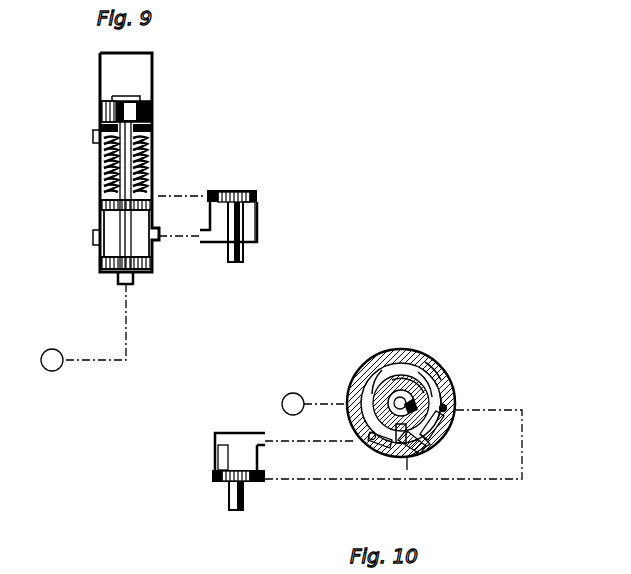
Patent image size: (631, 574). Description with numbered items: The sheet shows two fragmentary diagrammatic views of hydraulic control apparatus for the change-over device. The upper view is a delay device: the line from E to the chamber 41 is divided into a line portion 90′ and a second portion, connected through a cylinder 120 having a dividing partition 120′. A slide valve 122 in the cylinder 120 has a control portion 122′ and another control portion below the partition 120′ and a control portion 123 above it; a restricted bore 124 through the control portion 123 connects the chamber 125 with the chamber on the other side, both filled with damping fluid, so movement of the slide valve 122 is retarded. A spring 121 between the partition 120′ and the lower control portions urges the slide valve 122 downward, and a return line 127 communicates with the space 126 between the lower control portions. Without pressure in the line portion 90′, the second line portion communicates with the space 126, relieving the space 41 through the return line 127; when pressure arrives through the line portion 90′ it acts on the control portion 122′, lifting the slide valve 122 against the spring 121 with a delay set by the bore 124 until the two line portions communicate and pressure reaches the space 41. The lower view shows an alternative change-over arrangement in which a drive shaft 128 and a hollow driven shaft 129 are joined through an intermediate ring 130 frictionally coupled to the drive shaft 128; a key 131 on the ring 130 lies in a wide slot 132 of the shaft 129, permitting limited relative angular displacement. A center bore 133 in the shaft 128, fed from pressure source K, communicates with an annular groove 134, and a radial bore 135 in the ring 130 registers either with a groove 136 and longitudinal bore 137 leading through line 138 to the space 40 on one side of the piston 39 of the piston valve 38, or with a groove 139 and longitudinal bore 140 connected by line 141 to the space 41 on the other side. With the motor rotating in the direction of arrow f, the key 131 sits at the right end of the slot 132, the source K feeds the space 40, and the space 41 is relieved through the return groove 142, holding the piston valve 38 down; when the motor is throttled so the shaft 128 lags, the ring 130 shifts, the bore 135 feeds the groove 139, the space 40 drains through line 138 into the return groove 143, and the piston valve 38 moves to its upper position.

In FIG. 9, the cylinder 120 is at (100, 191).
In FIG. 9, the dividing partition 120′ is at (100, 142).
In FIG. 9, the spring 121 is at (150, 158).
In FIG. 9, the slide valve 122 is at (118, 170).
In FIG. 9, the control portion 122′ is at (100, 263).
In FIG. 9, the control portion 123 is at (100, 117).
In FIG. 9, the restricted bore 124 is at (150, 118).
In FIG. 9, the chamber 125 is at (150, 133).
In FIG. 9, the space 126 is at (146, 256).
In FIG. 9, the return line 127 is at (100, 223).
In FIG. 9, the line portion 90′ is at (127, 320).
In FIG. 9, the line connection E is at (52, 360).
In FIG. 9, the piston valve assembly 38 is at (245, 259).
In FIG. 10, the piston valve assembly 38 is at (243, 503).
In FIG. 9, the pressure piston 39 is at (258, 200).
In FIG. 10, the pressure piston 39 is at (218, 476).
In FIG. 9, the space 40 is at (238, 189).
In FIG. 10, the space 40 is at (220, 443).
In FIG. 9, the space 41 is at (250, 229).
In FIG. 10, the space 41 is at (224, 486).
In FIG. 10, the drive shaft 128 is at (372, 411).
In FIG. 10, the hollow driven shaft 129 is at (388, 351).
In FIG. 10, the intermediate ring 130 is at (358, 383).
In FIG. 10, the key 131 is at (410, 355).
In FIG. 10, the slot 132 is at (385, 367).
In FIG. 10, the center bore 133 is at (437, 374).
In FIG. 10, the annular groove 134 is at (451, 393).
In FIG. 10, the radial bore 135 is at (418, 455).
In FIG. 10, the groove 136 is at (407, 470).
In FIG. 10, the longitudinal bore 137 is at (380, 453).
In FIG. 10, the line 138 is at (288, 440).
In FIG. 10, the groove 139 is at (449, 431).
In FIG. 10, the longitudinal bore 140 is at (453, 407).
In FIG. 10, the line 141 is at (312, 480).
In FIG. 10, the return groove 142 is at (440, 444).
In FIG. 10, the return groove 143 is at (370, 440).
In FIG. 10, the arrow f is at (427, 355).
In FIG. 10, the pressure source K is at (314, 404).